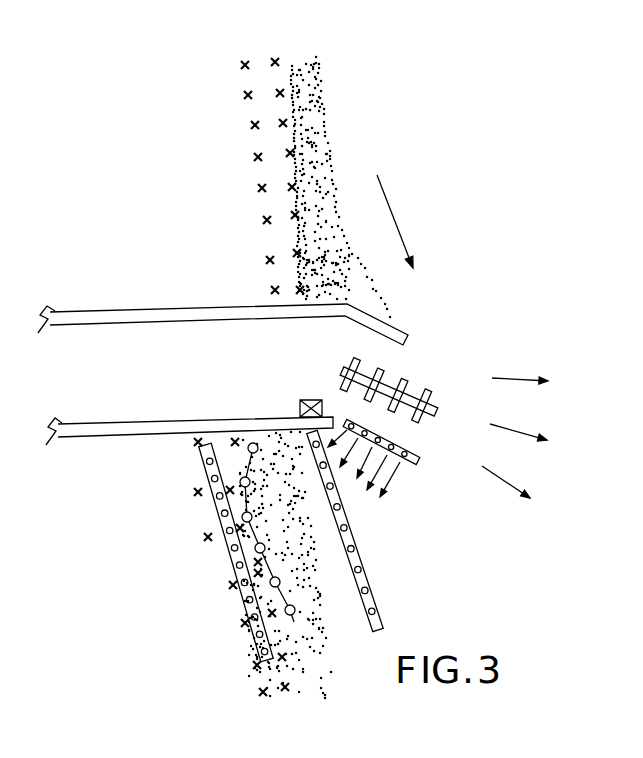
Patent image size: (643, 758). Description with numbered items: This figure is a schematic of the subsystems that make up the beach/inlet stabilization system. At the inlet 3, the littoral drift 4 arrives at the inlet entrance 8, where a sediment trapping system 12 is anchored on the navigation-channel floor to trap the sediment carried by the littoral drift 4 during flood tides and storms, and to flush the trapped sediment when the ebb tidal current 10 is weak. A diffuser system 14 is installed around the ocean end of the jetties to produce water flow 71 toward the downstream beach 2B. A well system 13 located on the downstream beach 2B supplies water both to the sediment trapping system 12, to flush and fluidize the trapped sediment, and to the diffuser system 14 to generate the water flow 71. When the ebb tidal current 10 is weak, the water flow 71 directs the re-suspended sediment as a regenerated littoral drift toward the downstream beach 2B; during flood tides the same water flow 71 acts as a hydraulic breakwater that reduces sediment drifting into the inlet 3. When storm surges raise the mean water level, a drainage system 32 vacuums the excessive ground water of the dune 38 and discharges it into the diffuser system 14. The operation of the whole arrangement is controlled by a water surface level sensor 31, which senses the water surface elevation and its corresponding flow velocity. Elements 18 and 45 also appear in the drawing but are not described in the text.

The inlet 3 is at (117, 374).
The littoral drift 4 is at (396, 221).
The inlet entrance 8 is at (442, 361).
The ebb tidal current 10 is at (330, 362).
The sediment trapping system 12 is at (401, 393).
The well system 13 is at (290, 598).
The diffuser system 14 is at (395, 451).
The lower plate 18 is at (165, 438).
The water surface level sensor 31 is at (304, 402).
The drainage system 32 is at (222, 557).
The dune 38 is at (262, 678).
The perforated right plate 45 is at (378, 599).
The water flow 71 is at (364, 478).
The downstream beach 2B is at (272, 507).